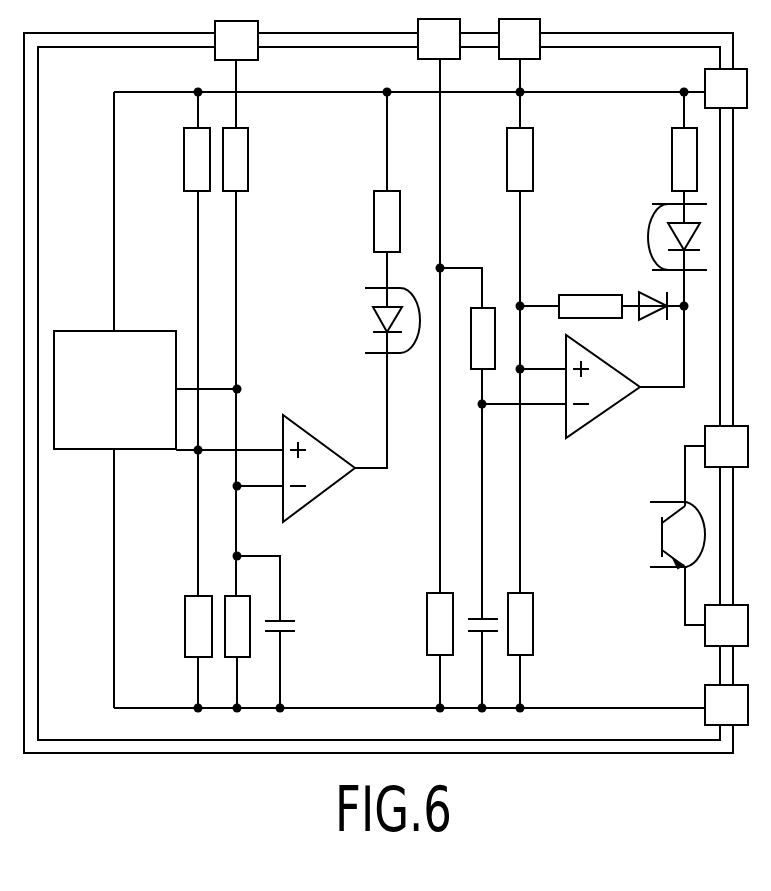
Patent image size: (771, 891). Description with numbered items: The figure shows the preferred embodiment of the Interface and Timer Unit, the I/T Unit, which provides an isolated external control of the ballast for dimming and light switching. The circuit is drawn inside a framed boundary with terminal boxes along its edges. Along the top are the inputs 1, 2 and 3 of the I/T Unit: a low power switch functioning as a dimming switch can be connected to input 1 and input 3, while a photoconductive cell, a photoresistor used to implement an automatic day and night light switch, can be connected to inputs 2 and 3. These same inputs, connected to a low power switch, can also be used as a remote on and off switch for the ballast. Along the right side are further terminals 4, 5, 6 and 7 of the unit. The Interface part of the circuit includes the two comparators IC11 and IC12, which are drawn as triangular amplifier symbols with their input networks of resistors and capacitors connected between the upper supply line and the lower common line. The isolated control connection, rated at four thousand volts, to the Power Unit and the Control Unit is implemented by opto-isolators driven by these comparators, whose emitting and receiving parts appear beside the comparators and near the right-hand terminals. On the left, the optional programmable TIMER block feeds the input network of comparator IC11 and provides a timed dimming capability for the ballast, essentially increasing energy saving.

The input 1 is at (236, 41).
The input 2 is at (439, 39).
The input 3 is at (519, 39).
The terminal 4 is at (726, 89).
The terminal 5 is at (726, 446).
The terminal 6 is at (726, 625).
The terminal 7 is at (726, 705).
The comparator IC11 is at (319, 448).
The comparator IC12 is at (601, 409).
The programmable timer TIMER is at (115, 390).